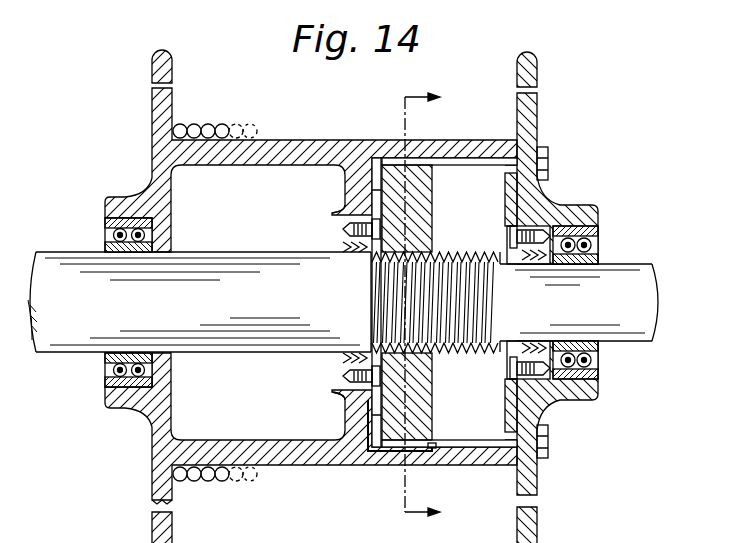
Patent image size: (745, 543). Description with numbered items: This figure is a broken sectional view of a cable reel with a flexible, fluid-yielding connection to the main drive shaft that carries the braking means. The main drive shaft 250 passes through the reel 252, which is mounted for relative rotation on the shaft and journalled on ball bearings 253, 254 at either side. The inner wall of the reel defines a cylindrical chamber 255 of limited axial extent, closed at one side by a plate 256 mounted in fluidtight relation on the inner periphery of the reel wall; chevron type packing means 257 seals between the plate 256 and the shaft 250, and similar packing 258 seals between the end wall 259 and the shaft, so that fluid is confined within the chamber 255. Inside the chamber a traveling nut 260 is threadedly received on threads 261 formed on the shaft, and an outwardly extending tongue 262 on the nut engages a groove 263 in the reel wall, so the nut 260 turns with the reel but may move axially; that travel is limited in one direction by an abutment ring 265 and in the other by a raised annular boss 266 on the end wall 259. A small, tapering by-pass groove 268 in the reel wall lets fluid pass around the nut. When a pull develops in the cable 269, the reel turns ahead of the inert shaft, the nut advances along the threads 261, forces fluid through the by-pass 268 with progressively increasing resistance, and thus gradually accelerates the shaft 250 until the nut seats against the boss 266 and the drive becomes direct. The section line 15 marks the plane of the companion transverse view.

The section line 15- 15 is at (435, 300).
The main drive shaft 250 is at (283, 336).
The reel 252 is at (312, 466).
The ball bearing 253 is at (105, 378).
The ball bearing 254 is at (600, 368).
The cylindrical chamber 255 is at (470, 432).
The plate 256 is at (343, 402).
The chevron type packing means 257 is at (333, 373).
The packing 258 is at (513, 353).
The end wall 259 is at (537, 138).
The traveling nut 260 is at (430, 413).
The threads 261 is at (456, 253).
The tongue 262 is at (386, 462).
The groove 263 is at (437, 444).
The abutment ring 265 is at (378, 158).
The raised annular boss 266 is at (515, 190).
The by-pass groove 268 is at (444, 158).
The cable 269 is at (238, 127).